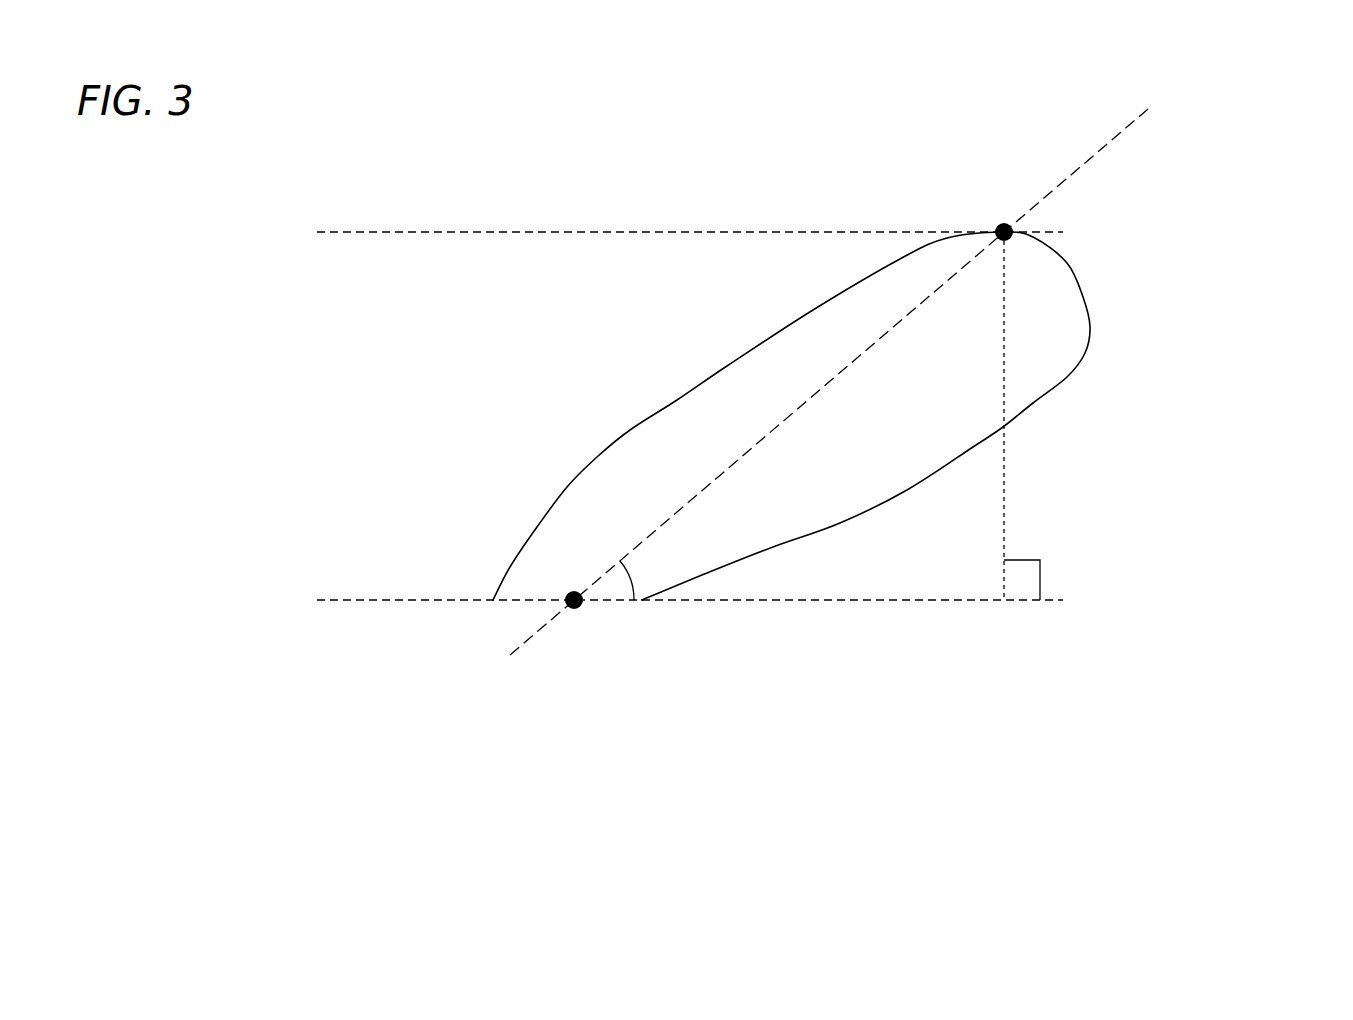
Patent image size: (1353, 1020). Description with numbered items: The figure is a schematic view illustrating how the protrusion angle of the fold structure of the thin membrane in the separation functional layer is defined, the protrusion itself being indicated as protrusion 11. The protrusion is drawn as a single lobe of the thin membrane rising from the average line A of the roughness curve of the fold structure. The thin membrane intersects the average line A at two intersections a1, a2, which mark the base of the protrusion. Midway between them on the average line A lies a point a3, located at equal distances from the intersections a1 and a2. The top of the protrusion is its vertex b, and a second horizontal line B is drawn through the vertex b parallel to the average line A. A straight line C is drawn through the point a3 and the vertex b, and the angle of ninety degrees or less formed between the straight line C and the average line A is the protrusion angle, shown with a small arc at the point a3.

The antenna radiation pattern lobe 11 is at (1188, 293).
The average line of the roughness curve A is at (660, 601).
The horizontal reference line B is at (660, 233).
The straight line C is at (846, 358).
The vertex of the protrusion b is at (997, 214).
The intersection a1 is at (493, 603).
The intersection a2 is at (641, 606).
The point at equal distances from the intersections a3 is at (576, 609).